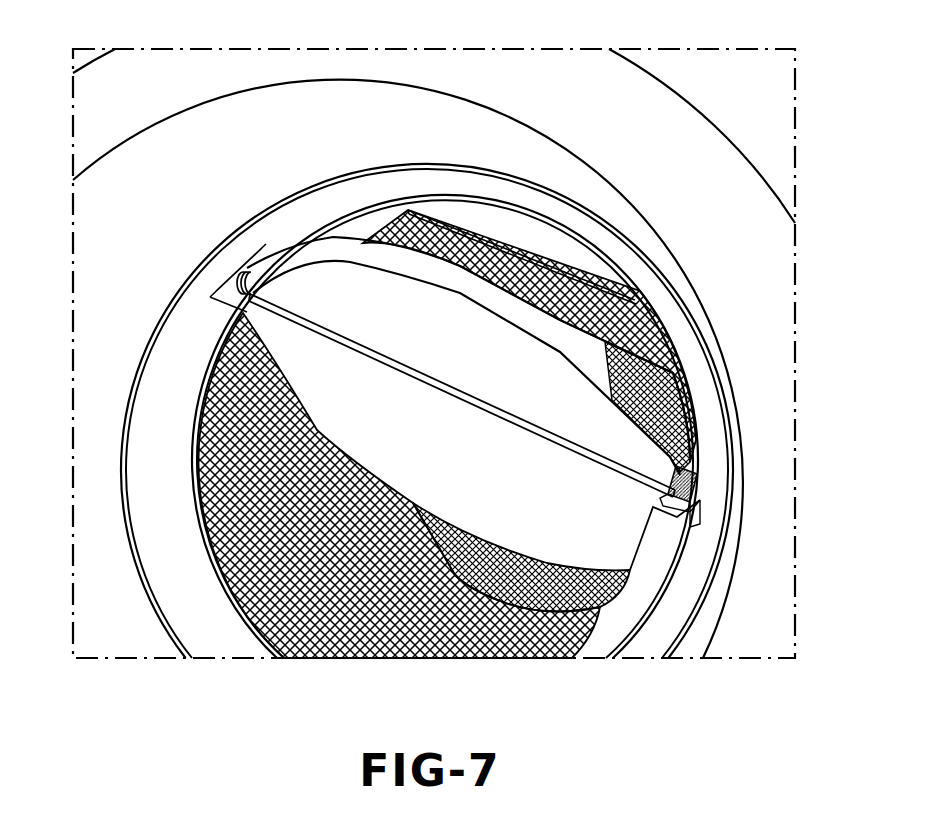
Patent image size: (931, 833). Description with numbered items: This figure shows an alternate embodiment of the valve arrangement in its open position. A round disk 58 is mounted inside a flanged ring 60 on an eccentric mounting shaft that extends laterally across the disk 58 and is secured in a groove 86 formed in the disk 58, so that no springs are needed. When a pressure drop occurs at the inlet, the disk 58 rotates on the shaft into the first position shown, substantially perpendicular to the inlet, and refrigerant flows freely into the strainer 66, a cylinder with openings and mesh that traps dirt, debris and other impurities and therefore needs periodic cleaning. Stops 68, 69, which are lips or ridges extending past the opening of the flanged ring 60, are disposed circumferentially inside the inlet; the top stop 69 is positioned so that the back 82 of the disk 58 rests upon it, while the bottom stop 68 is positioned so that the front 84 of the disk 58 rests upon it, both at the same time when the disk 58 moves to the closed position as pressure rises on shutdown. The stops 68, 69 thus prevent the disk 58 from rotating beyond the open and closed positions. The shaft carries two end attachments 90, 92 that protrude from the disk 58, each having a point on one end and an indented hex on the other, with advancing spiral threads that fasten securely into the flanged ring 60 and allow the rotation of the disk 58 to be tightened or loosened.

The disk 58 is at (595, 518).
The flanged ring 60 is at (747, 607).
The strainer 66 is at (228, 462).
The stop 68 is at (183, 372).
The stop 69 is at (587, 272).
The back of the disk 82 is at (453, 268).
The front of the disk 84 is at (523, 523).
The groove 86 is at (285, 312).
The end attachment 90 is at (240, 272).
The end attachment 92 is at (697, 487).